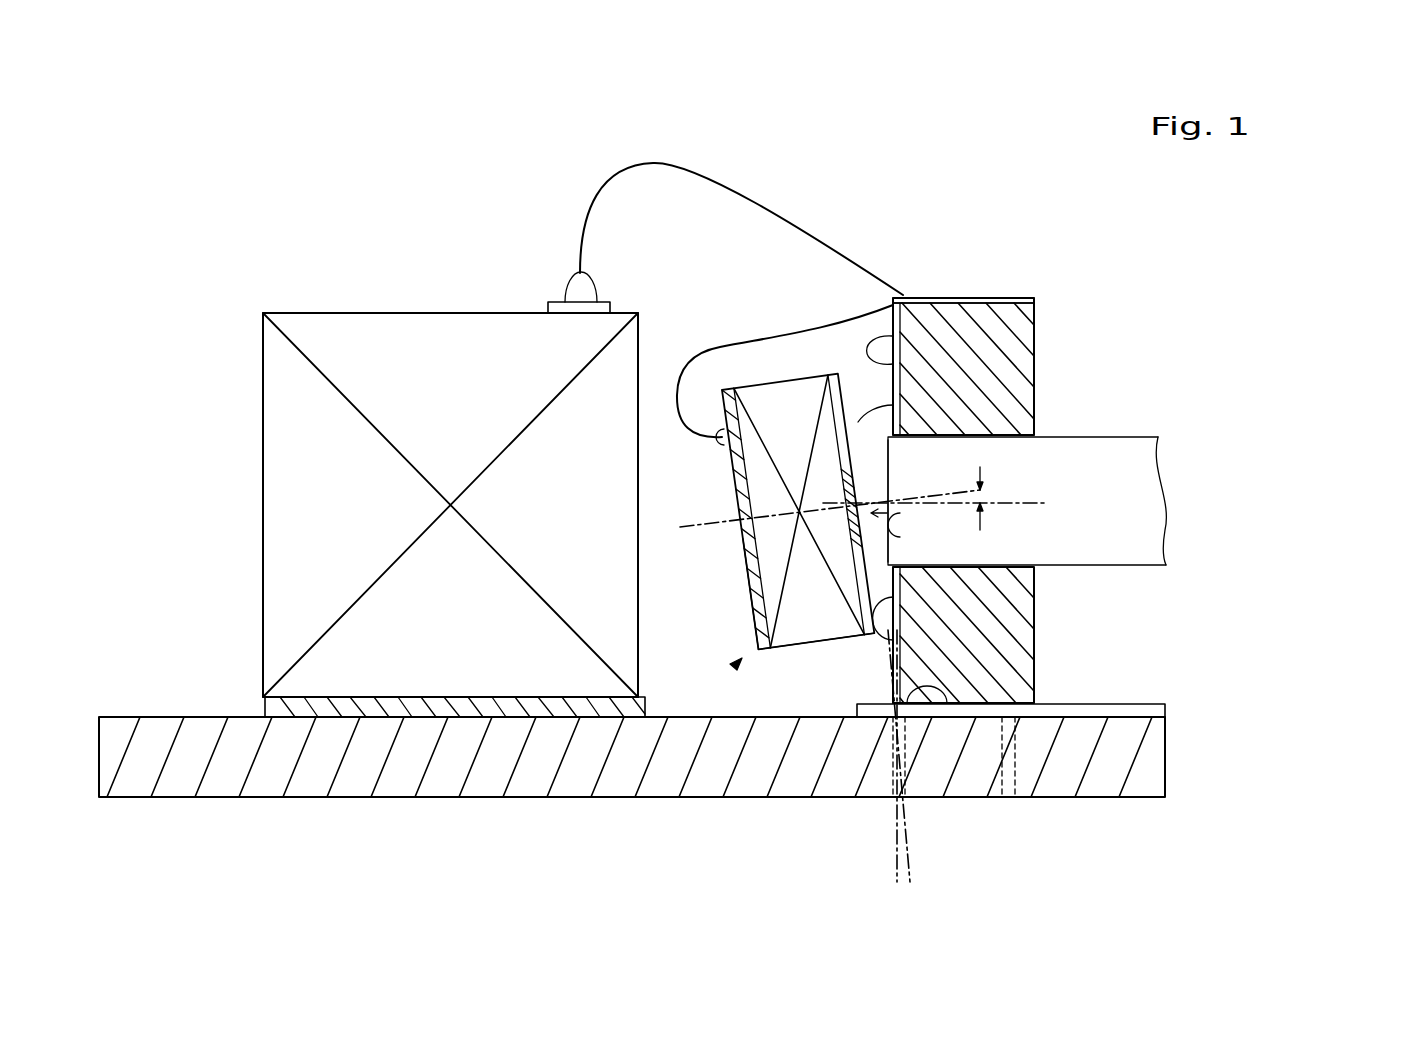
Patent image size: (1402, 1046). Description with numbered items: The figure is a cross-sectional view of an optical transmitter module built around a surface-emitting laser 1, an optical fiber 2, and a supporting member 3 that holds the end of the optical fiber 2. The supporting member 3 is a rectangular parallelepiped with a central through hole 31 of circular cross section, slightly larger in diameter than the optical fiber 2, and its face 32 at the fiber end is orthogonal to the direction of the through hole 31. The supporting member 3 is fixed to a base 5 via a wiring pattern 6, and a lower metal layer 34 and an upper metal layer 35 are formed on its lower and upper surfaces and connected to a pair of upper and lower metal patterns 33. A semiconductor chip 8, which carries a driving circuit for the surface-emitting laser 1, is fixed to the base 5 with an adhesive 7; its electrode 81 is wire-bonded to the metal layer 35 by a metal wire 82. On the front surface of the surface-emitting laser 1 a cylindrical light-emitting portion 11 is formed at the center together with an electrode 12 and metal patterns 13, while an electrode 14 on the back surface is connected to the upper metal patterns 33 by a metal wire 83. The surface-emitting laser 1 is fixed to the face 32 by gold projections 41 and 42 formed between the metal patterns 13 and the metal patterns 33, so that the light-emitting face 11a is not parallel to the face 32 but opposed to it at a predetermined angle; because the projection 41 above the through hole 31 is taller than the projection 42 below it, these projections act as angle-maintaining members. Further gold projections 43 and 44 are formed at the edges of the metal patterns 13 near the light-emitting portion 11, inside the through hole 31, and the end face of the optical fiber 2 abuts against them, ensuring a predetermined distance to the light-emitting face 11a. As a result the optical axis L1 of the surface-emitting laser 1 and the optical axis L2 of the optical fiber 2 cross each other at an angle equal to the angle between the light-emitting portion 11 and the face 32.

The surface-emitting laser 1 is at (742, 658).
The optical fiber 2 is at (1140, 478).
The supporting member 3 is at (1030, 632).
The base 5 is at (1150, 762).
The wiring pattern 6 is at (1163, 712).
The adhesive 7 is at (265, 711).
The semiconductor chip 8 is at (290, 450).
The light-emitting portion 11 is at (855, 487).
The light-emitting face 11a is at (867, 553).
The electrode 12 is at (878, 600).
The metal patterns 13 is at (887, 423).
The electrode 14 is at (748, 584).
The through hole 31 is at (985, 465).
The face 32 is at (1034, 332).
The metal patterns 33 is at (893, 302).
The metal layer 34 is at (985, 703).
The metal layer 35 is at (957, 298).
The projection 41 is at (872, 357).
The projection 42 is at (886, 650).
The projection 43 is at (893, 405).
The projection 44 is at (890, 563).
The electrode 81 is at (565, 297).
The metal wire 82 is at (715, 178).
The metal wire 83 is at (705, 345).
The optical axis of the surface-emitting laser L1 is at (690, 530).
The optical axis of the optical fiber L2 is at (1023, 503).